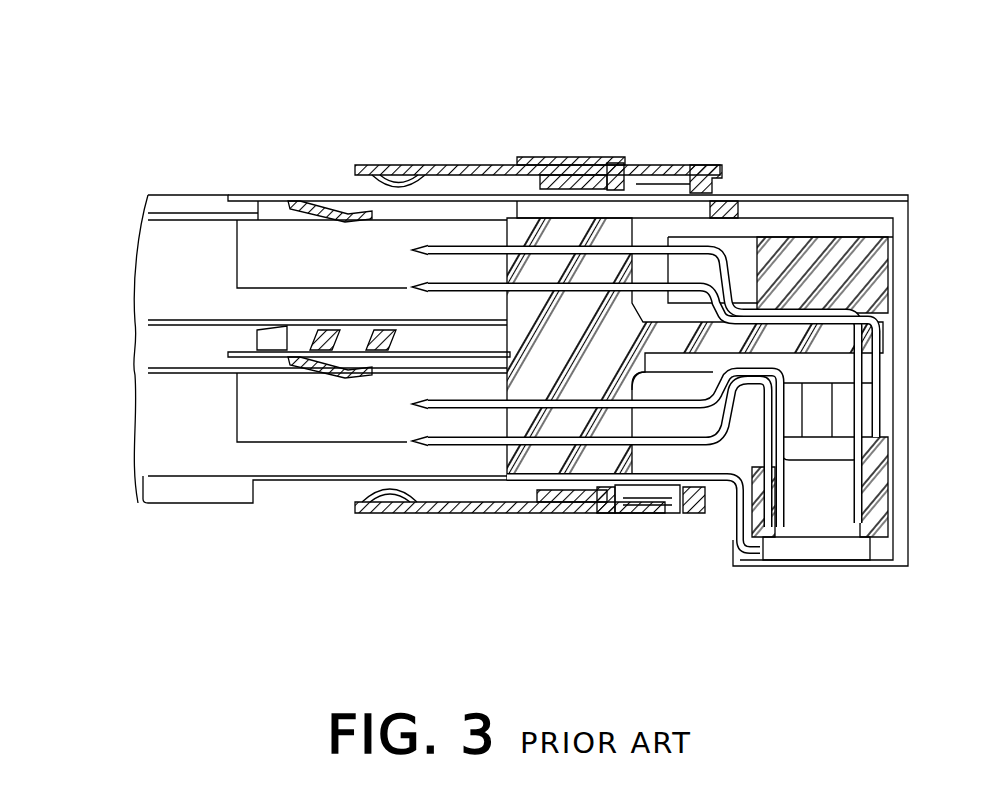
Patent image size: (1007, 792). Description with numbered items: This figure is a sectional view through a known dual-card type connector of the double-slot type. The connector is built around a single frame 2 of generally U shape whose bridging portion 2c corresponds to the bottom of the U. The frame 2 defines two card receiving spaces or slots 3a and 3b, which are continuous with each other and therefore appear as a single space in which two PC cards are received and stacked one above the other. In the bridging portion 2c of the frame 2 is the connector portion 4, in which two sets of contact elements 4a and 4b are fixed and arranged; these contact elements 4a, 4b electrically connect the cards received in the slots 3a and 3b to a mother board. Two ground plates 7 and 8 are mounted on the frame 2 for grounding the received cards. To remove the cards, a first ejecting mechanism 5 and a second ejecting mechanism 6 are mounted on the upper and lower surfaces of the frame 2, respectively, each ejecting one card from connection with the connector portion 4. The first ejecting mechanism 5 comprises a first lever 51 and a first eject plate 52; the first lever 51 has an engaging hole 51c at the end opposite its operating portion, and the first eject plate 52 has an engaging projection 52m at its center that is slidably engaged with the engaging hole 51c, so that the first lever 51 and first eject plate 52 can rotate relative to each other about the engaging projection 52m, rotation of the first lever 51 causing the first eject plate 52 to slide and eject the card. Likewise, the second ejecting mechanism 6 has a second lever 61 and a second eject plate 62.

The frame 2 is at (277, 349).
The card receiving space 3a is at (212, 284).
The card receiving space 3b is at (212, 441).
The bridging portion 2c is at (593, 234).
The connector portion 4 is at (616, 297).
The contact elements 4a is at (406, 233).
The contact elements 4b is at (406, 390).
The first ejecting mechanism 5 is at (576, 109).
The first lever 51 is at (570, 165).
The first eject plate 52 is at (483, 165).
The engaging hole 51c is at (633, 163).
The engaging projection 52m is at (715, 165).
The second ejecting mechanism 6 is at (530, 559).
The second lever 61 is at (605, 537).
The second eject plate 62 is at (455, 513).
The ground plate 7 is at (843, 195).
The ground plate 8 is at (729, 542).